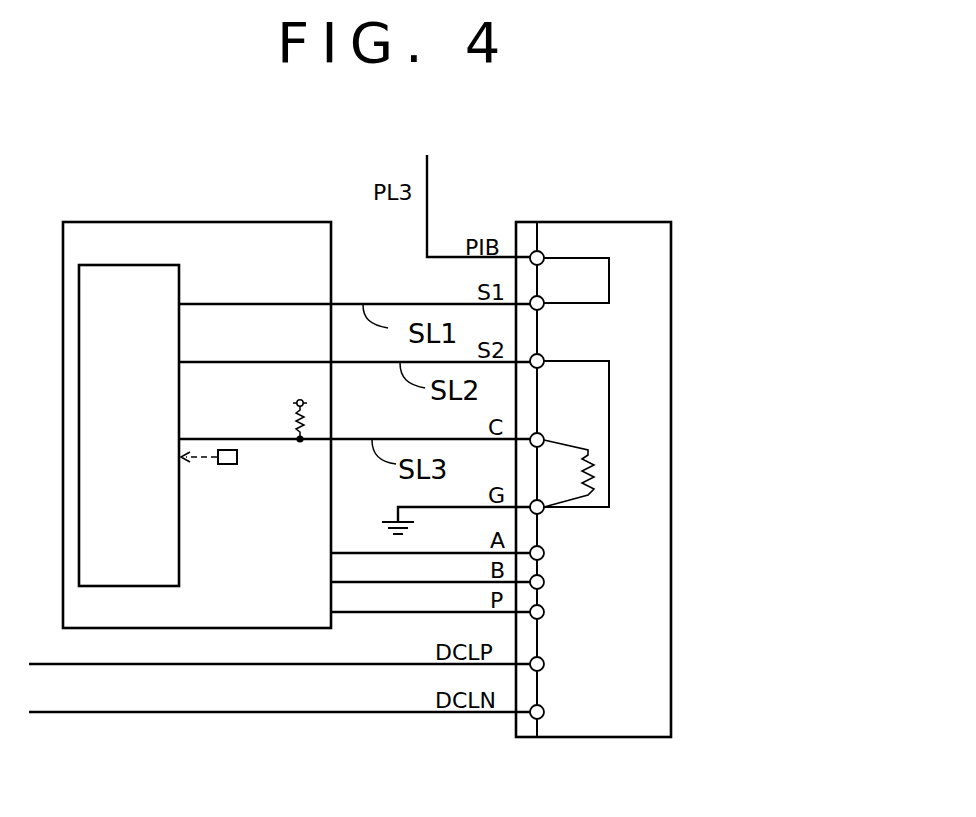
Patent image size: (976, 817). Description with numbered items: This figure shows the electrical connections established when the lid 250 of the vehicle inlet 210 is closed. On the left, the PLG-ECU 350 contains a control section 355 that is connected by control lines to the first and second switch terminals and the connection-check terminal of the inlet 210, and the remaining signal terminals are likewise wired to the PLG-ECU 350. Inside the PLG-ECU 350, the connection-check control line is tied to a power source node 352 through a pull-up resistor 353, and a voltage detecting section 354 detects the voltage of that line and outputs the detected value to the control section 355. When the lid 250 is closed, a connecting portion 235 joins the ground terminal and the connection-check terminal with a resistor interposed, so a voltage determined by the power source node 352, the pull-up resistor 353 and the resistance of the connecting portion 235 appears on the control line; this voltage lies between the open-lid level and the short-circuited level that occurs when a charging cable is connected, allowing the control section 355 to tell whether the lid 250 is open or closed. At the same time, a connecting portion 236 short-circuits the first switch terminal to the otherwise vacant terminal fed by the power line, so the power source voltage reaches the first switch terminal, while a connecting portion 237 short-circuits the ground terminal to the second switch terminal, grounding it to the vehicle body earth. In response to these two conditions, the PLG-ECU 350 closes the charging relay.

The inlet 210 is at (517, 222).
The connecting portion 235 is at (563, 441).
The connecting portion 236 is at (600, 258).
The connecting portion 237 is at (590, 508).
The lid 250 is at (672, 222).
The PLG-ECU 350 is at (283, 221).
The power source node 352 is at (307, 403).
The pull-up resistor 353 is at (302, 421).
The voltage detecting section 354 is at (230, 465).
The control section 355 is at (131, 587).